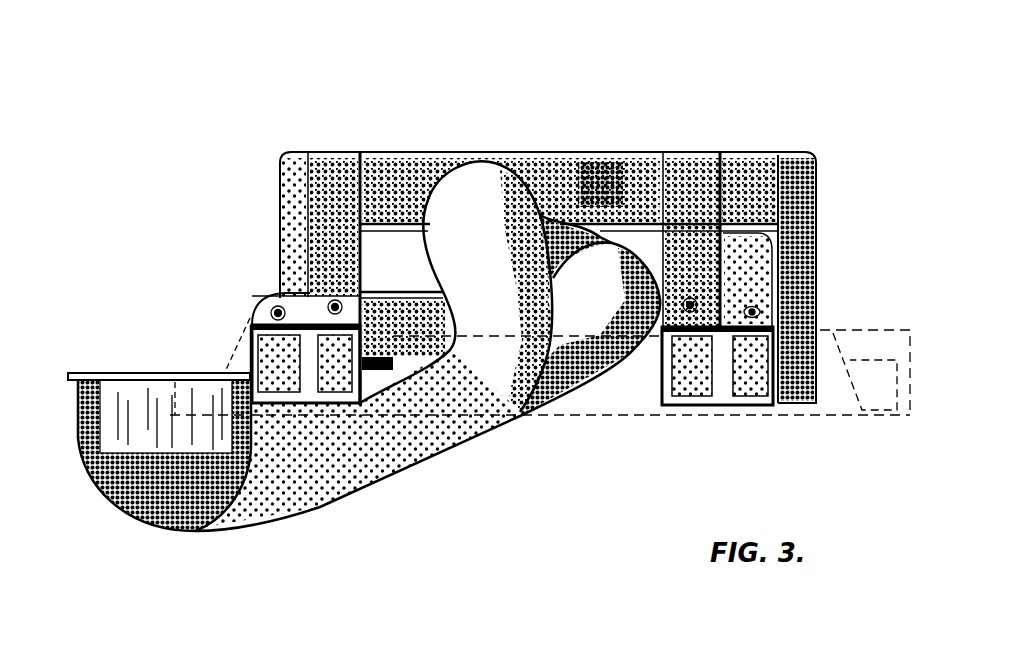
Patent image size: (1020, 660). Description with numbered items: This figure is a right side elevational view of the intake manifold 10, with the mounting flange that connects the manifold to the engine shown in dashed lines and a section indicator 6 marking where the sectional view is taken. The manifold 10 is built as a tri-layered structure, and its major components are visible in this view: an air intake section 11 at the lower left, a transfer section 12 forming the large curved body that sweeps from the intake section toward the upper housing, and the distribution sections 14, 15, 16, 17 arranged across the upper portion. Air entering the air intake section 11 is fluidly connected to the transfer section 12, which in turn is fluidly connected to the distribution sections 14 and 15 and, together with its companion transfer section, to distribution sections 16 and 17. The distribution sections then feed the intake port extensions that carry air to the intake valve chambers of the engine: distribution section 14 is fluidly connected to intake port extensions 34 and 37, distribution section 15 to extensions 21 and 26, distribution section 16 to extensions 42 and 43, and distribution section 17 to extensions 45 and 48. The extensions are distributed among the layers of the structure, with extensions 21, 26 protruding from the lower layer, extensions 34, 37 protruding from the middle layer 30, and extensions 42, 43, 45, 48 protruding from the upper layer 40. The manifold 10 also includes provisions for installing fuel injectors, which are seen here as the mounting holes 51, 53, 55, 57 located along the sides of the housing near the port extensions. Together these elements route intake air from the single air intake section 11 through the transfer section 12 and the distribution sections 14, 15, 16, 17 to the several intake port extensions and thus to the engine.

The section line 6- 6 is at (486, 50).
The manifold 10 is at (135, 578).
The air intake section 11 is at (133, 460).
The transfer section 12 is at (350, 470).
The distribution section 14 is at (459, 230).
The distribution section 15 is at (592, 292).
The distribution section 16 is at (383, 185).
The distribution section 17 is at (627, 168).
The intake port extension 21 is at (253, 345).
The intake port extension 26 is at (637, 360).
The middle layer 30 is at (390, 252).
The intake port extension 34 is at (413, 267).
The intake port extension 37 is at (757, 387).
The upper layer 40 is at (598, 182).
The intake port extension 42 is at (292, 188).
The intake port extension 43 is at (340, 373).
The intake port extension 45 is at (698, 385).
The intake port extension 48 is at (813, 230).
The mounting hole 51 is at (270, 309).
The mounting hole 53 is at (330, 298).
The mounting hole 55 is at (663, 328).
The mounting hole 57 is at (760, 307).